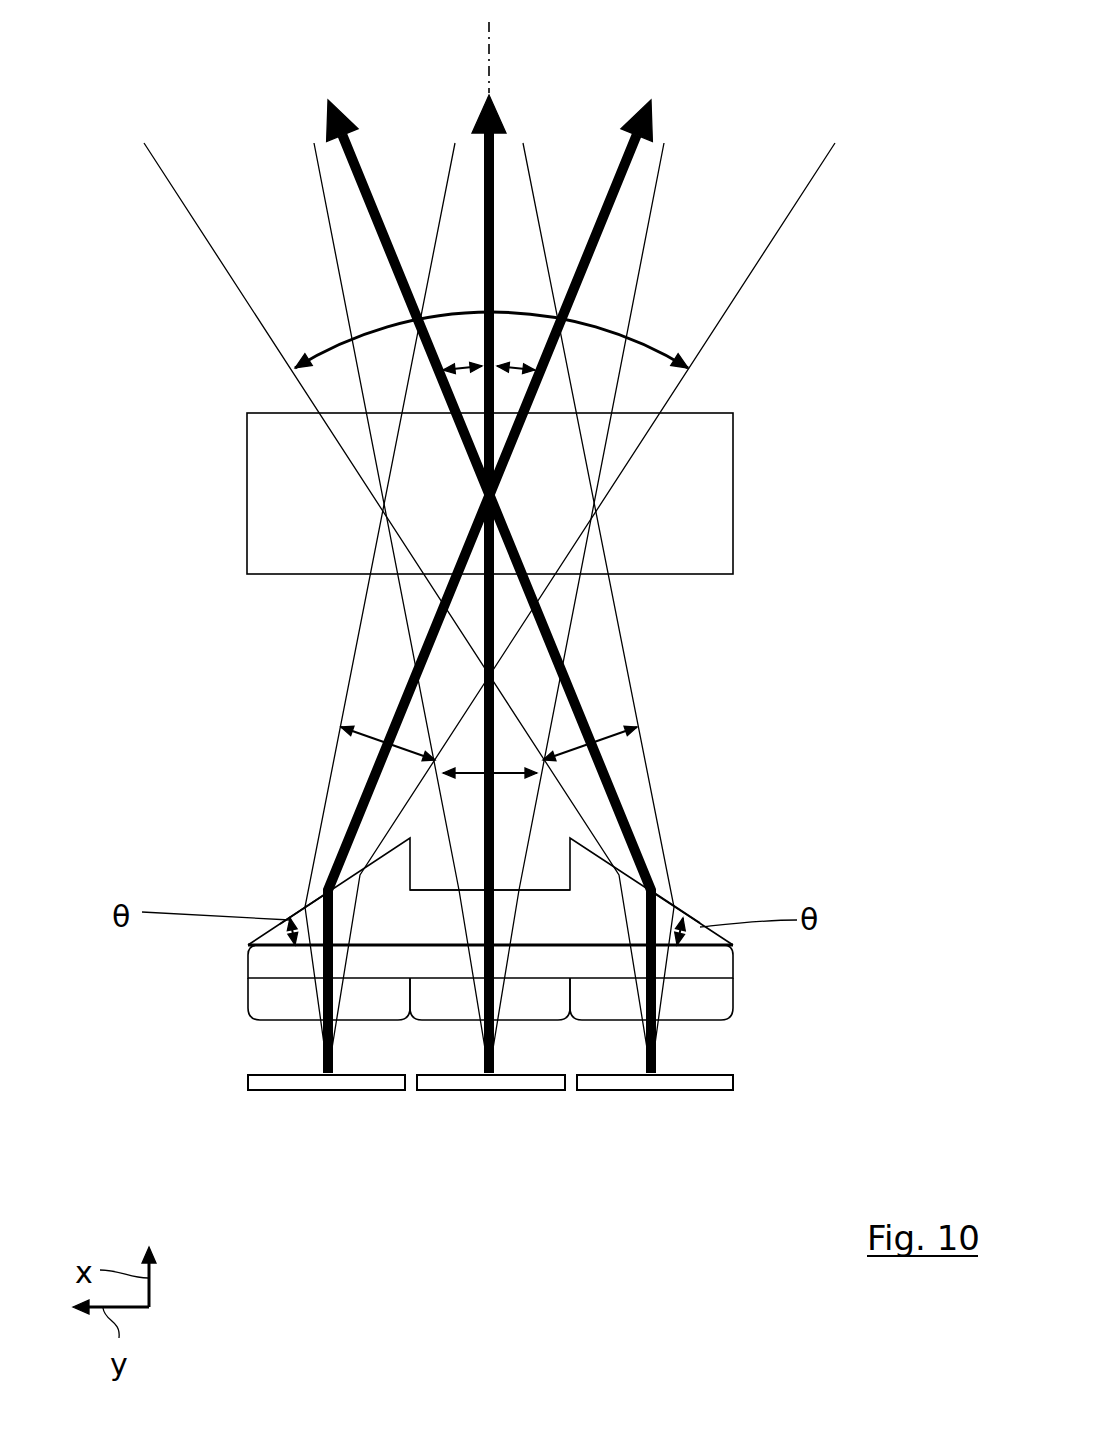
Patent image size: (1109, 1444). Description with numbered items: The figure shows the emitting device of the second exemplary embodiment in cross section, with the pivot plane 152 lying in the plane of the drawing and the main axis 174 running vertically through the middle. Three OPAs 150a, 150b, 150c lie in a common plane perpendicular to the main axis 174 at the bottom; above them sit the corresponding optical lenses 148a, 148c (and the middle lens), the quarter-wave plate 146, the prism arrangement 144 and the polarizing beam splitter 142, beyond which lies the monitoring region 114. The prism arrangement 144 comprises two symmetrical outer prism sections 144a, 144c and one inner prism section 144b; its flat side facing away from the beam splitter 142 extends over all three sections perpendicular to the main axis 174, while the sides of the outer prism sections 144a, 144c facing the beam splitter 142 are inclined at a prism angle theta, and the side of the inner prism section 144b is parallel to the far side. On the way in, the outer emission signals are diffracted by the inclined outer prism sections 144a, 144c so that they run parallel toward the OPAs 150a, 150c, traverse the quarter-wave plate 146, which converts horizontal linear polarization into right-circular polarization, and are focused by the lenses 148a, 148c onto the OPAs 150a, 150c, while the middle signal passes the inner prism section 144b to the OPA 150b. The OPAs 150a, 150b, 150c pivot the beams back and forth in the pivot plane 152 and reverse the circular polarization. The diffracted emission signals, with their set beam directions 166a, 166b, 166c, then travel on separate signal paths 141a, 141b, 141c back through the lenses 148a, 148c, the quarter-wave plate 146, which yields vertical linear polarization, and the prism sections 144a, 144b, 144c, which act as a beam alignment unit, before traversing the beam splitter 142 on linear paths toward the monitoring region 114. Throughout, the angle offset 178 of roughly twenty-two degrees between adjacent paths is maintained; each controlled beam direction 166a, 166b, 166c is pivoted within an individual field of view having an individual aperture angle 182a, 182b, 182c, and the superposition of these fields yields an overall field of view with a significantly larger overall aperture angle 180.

The monitoring region 114 is at (353, 43).
The pivot plane 152 is at (254, 110).
The main axis 174 is at (484, 62).
The angle offset 178 is at (462, 360).
The overall aperture angle 180 is at (672, 345).
The signal path 141a is at (523, 430).
The signal path 141b is at (497, 443).
The signal path 141c is at (385, 240).
The polarizing beam splitter 142 is at (268, 515).
The prism arrangement 144 is at (310, 899).
The outer prism section 144a is at (312, 918).
The inner prism section 144b is at (435, 925).
The outer prism section 144c is at (663, 912).
The quarter-wave plate 146 is at (270, 966).
The optical lens 148a is at (273, 998).
The optical lens 148c is at (715, 998).
The OPA 150a is at (342, 1097).
The OPA 150b is at (502, 1097).
The OPA 150c is at (672, 1097).
The set beam direction 166a is at (427, 712).
The set beam direction 166b is at (483, 727).
The set beam direction 166c is at (580, 697).
The individual aperture angle 182a is at (370, 730).
The individual aperture angle 182b is at (516, 776).
The individual aperture angle 182c is at (640, 730).